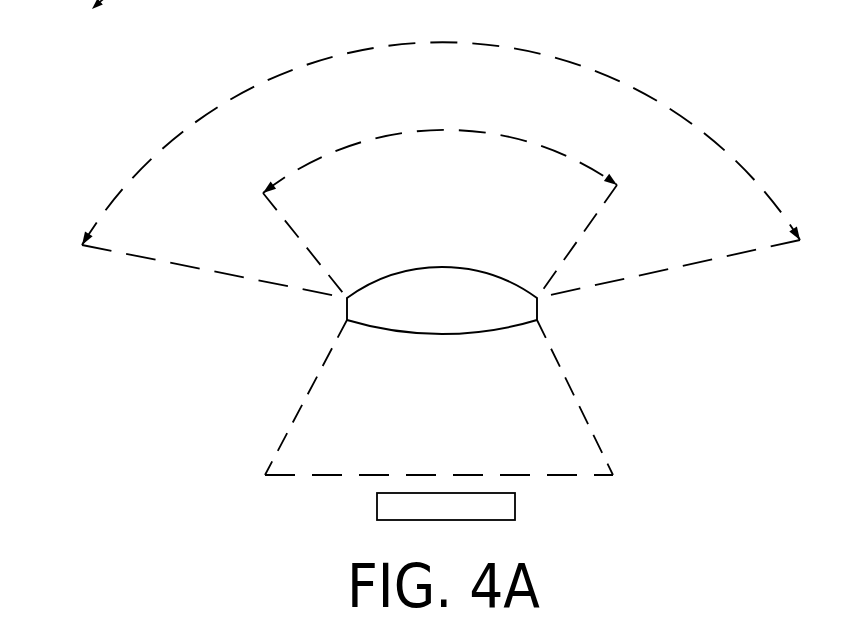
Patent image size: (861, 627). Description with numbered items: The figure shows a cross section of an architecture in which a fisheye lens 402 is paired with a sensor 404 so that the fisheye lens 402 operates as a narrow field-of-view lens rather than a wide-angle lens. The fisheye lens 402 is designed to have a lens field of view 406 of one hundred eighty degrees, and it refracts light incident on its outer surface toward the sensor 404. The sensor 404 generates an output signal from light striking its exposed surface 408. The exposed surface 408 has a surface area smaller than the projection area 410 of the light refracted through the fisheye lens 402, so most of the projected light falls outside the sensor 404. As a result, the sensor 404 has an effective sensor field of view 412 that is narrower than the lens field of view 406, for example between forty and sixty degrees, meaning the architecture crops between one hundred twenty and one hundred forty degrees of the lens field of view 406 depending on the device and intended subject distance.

The fisheye lens 402 is at (442, 300).
The sensor 404 is at (446, 506).
The lens field of view 406 is at (245, 97).
The exposed surface 408 is at (500, 477).
The projection area 410 is at (290, 475).
The effective sensor field of view 412 is at (365, 140).